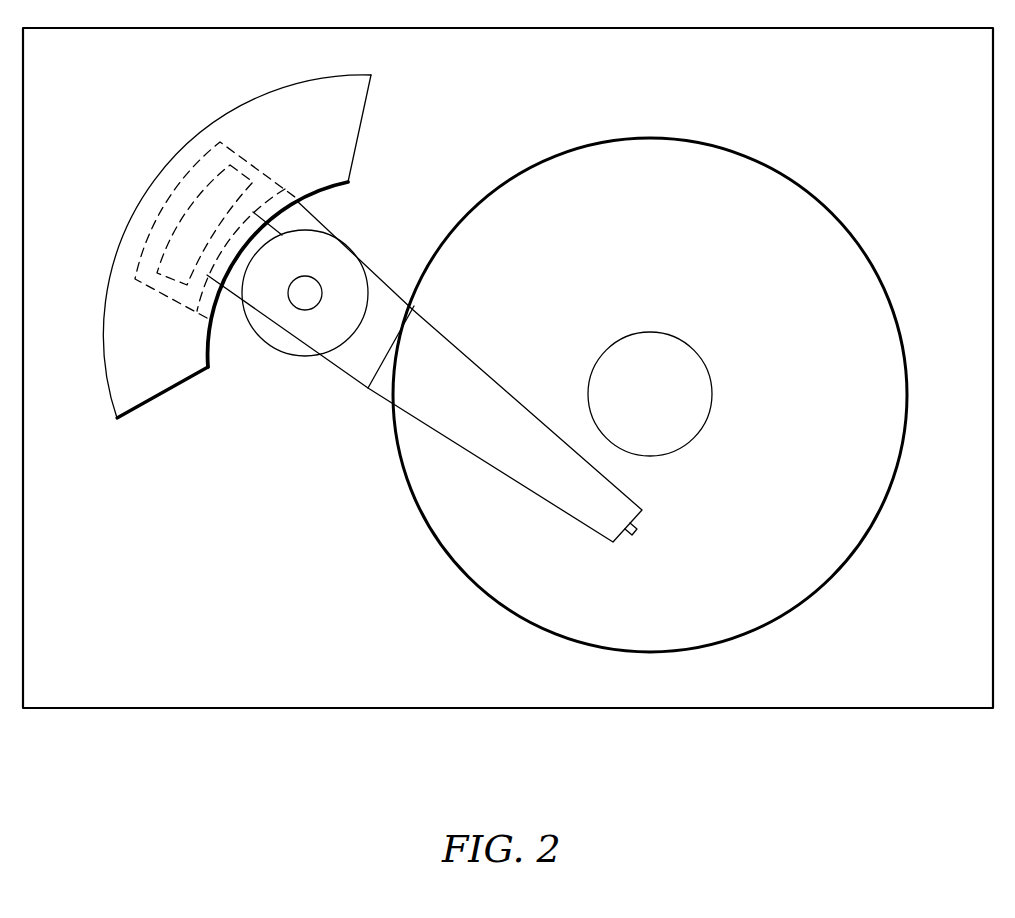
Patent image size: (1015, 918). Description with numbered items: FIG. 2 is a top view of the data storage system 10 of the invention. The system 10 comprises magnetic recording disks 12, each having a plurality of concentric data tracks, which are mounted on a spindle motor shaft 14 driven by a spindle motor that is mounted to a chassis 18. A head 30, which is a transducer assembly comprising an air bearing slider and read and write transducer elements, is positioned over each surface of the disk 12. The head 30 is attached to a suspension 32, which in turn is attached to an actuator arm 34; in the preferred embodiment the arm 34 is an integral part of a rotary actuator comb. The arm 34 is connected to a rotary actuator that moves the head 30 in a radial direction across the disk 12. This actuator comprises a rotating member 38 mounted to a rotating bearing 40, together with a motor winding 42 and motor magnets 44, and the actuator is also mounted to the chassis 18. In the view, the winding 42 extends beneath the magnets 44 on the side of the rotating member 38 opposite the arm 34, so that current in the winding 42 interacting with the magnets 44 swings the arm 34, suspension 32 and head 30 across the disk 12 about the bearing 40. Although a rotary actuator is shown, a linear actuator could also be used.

The data storage system 10 is at (508, 440).
The magnetic recording disk 12 is at (645, 221).
The spindle motor shaft 14 is at (688, 355).
The chassis 18 is at (879, 107).
The head 30 is at (637, 531).
The suspension 32 is at (492, 388).
The actuator arm 34 is at (347, 375).
The rotating member 38 is at (292, 341).
The rotating bearing 40 is at (310, 286).
The motor winding 42 is at (137, 282).
The motor magnets 44 is at (355, 128).